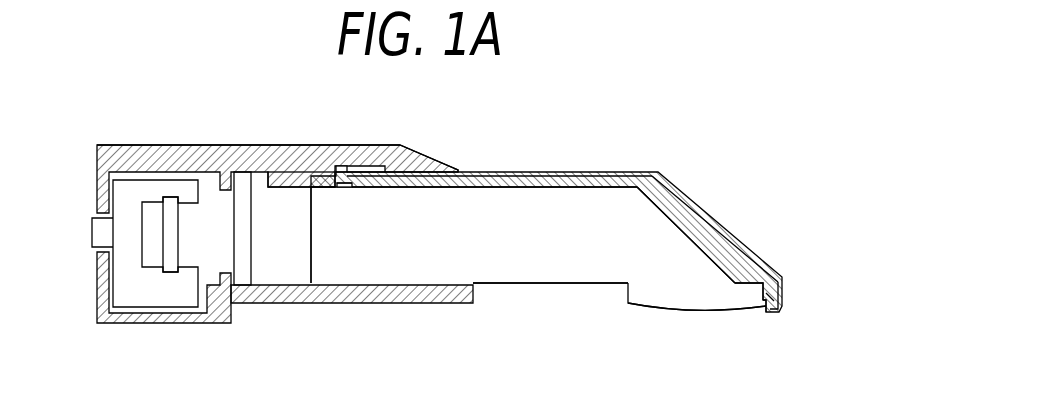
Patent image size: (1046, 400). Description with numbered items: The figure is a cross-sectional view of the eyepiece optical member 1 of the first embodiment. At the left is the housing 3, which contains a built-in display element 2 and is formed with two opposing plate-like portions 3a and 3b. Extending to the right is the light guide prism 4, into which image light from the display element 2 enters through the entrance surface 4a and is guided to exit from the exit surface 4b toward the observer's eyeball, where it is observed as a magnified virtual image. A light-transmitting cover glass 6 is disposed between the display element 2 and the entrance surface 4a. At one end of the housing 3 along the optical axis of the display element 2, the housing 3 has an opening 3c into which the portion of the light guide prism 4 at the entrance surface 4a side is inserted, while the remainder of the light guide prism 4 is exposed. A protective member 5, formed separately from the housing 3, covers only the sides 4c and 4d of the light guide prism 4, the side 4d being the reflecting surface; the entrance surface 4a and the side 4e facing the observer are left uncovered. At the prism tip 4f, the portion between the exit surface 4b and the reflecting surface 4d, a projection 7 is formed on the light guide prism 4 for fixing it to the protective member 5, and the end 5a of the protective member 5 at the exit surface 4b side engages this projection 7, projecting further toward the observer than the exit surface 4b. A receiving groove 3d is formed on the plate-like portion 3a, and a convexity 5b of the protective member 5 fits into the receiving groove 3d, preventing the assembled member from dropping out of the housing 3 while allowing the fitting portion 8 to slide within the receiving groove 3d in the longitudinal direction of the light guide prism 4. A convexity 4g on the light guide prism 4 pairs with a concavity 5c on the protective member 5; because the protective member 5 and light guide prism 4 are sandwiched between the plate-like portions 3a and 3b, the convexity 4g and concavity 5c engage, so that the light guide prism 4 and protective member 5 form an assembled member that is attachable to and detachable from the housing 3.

The eyepiece optical member 1 is at (640, 103).
The display element 2 is at (105, 233).
The housing 3 is at (150, 145).
The plate-like portion 3a is at (270, 145).
The plate-like portion 3b is at (322, 303).
The opening 3c is at (465, 167).
The receiving groove 3d is at (312, 170).
The light guide prism 4 is at (577, 270).
The entrance surface 4a is at (311, 222).
The exit surface 4b is at (692, 311).
The side 4c is at (522, 182).
The reflecting surface 4d is at (688, 203).
The side 4e is at (500, 285).
The prism tip 4f is at (763, 273).
The convexity 4g is at (341, 188).
The protective member 5 is at (567, 173).
The end 5a is at (781, 312).
The convexity 5b is at (350, 172).
The concavity 5c is at (350, 188).
The cover glass 6 is at (245, 237).
The projection 7 is at (783, 290).
The fitting portion 8 is at (338, 166).